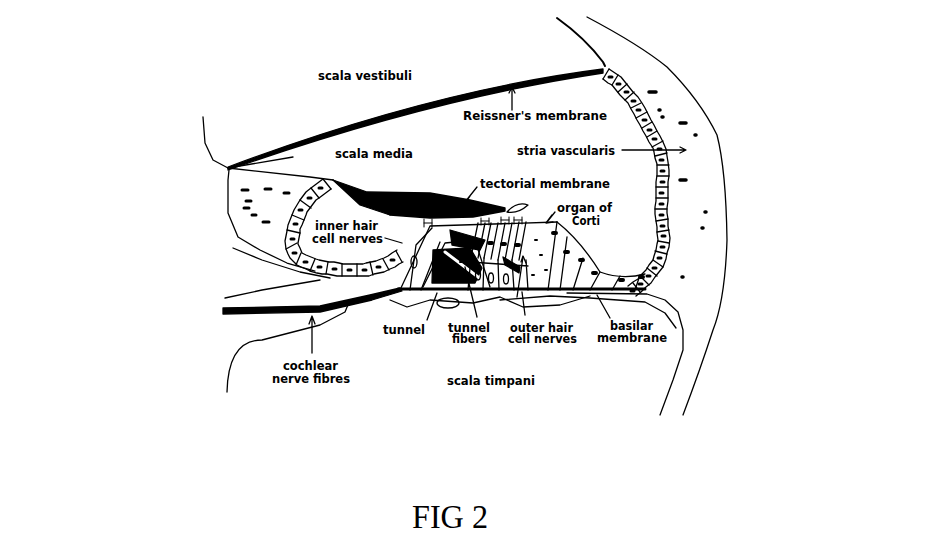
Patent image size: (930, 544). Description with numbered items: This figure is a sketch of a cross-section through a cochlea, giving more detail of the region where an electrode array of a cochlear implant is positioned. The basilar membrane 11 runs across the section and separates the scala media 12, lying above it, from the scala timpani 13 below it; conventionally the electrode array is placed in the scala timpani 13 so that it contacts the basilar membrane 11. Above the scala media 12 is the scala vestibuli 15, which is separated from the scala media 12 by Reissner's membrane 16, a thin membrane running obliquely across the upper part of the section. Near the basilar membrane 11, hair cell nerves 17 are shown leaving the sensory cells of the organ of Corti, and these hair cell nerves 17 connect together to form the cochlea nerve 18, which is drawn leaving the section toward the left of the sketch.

The basilar membrane 11 is at (397, 290).
The scala media 12 is at (230, 170).
The scala timpani 13 is at (660, 382).
The scala vestibuli 15 is at (238, 83).
The Reissner's membrane 16 is at (605, 64).
The hair cell nerves 17 is at (648, 293).
The cochlea nerve 18 is at (223, 312).